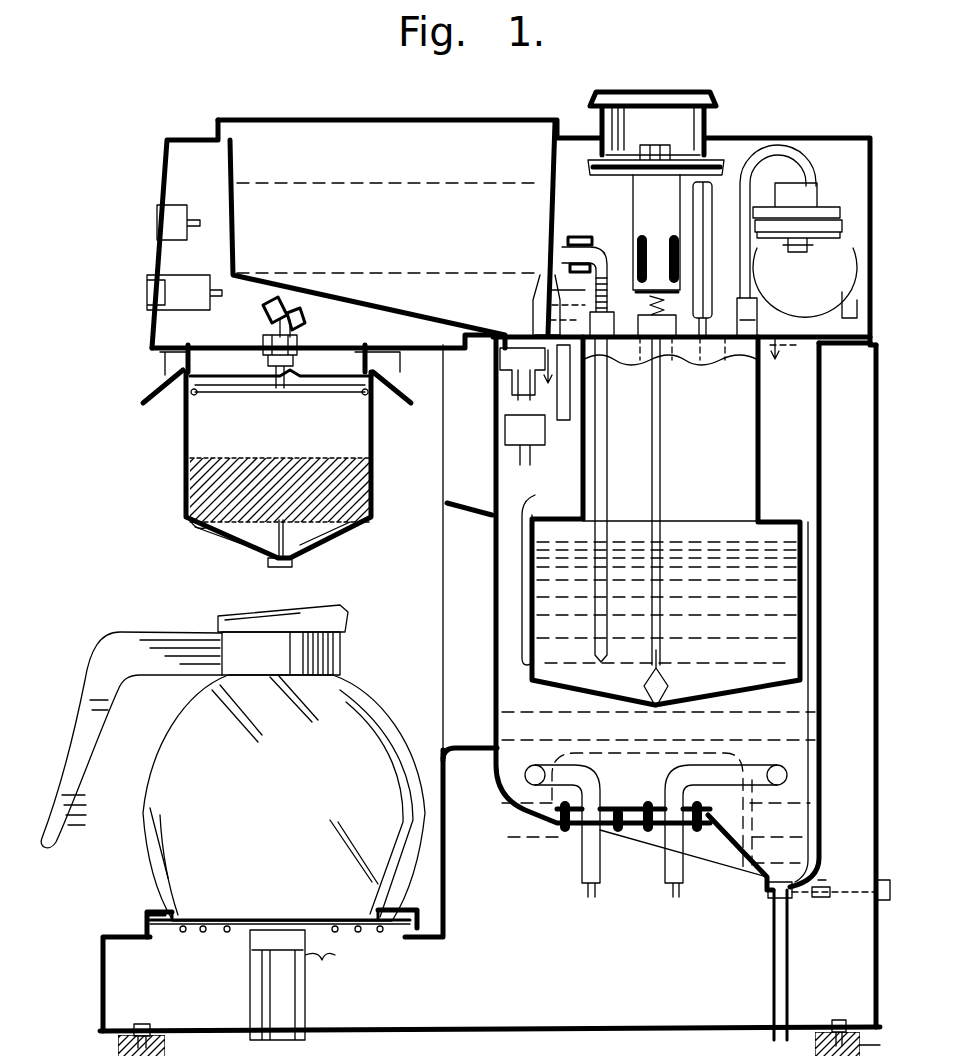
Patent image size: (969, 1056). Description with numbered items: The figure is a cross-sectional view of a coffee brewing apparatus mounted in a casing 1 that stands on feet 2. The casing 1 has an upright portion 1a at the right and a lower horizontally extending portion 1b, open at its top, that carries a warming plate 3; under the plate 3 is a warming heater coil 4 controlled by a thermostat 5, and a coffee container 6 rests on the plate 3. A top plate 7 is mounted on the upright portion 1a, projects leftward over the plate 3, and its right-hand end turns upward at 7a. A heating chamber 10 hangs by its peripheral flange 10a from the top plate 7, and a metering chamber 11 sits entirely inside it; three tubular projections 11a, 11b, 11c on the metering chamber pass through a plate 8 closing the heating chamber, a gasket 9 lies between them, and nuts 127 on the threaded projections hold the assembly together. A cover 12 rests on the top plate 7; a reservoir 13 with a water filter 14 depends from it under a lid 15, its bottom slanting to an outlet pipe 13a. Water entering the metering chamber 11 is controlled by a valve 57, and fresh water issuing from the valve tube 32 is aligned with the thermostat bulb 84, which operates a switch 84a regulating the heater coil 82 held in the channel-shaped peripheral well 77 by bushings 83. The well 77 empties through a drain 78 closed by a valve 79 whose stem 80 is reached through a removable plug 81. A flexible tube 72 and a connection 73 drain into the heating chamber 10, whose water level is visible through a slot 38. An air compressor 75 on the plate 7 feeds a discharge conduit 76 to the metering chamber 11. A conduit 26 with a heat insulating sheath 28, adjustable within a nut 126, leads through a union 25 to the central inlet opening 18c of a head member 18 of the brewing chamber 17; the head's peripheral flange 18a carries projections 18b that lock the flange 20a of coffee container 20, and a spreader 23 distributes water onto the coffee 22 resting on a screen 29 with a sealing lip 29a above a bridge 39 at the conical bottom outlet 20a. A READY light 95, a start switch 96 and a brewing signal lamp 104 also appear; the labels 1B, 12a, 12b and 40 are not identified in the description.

The casing 1 is at (560, 1027).
The upright portion 1a is at (880, 732).
The lower horizontally extending portion 1b is at (100, 982).
The section line 1B is at (664, 370).
The feet 2 is at (899, 1050).
The warming plate 3 is at (148, 912).
The warming heater coil 4 is at (200, 934).
The thermostat 5 is at (262, 1002).
The coffee container 6 is at (170, 760).
The top plate 7 is at (432, 347).
The upwardly extending end of top plate 7a is at (872, 197).
The plate 8 is at (858, 305).
The gasket 9 is at (795, 360).
The heating chamber 10 is at (825, 437).
The peripheral flange 10a is at (848, 350).
The metering chamber 11 is at (805, 522).
The tubular projection 11a is at (605, 365).
The tubular projection 11b is at (685, 365).
The tubular projection 11c is at (720, 370).
The cover 12 is at (733, 140).
The cap body 12a is at (705, 125).
The cap rim 12b is at (648, 92).
The reservoir 13 is at (228, 210).
The outlet pipe 13a is at (545, 335).
The water filter 14 is at (325, 185).
The lid 15 is at (302, 120).
The brewing chamber 17 is at (259, 448).
The head member 18 is at (350, 373).
The peripheral flange 18a is at (403, 402).
The projections 18b is at (150, 380).
The central inlet opening 18c is at (330, 347).
The coffee container 20 is at (375, 420).
The outwardly flaring flange 20a is at (272, 567).
The coffee 22 is at (340, 485).
The spreader 23 is at (232, 392).
The union 25 is at (263, 343).
The conduit 26 is at (600, 247).
The heat insulating sheath 28 is at (576, 237).
The screen 29 is at (245, 540).
The flexible plastic peripheral lip 29a is at (195, 527).
The valve tube 32 is at (505, 478).
The slot 38 is at (478, 750).
The molded plastic bridge 39 is at (315, 535).
The funnel 40 is at (550, 285).
The valve 57 is at (665, 705).
The flexible tube 72 is at (718, 216).
The connection 73 is at (737, 330).
The air compressor 75 is at (845, 258).
The discharge conduit 76 is at (800, 160).
The channel-shaped peripheral well 77 is at (822, 790).
The drain 78 is at (772, 886).
The valve 79 is at (790, 888).
The stem 80 is at (826, 885).
The removable plug 81 is at (890, 893).
The heater coil 82 is at (528, 778).
The bushings 83 is at (578, 832).
The bulb 84 is at (520, 598).
The switch 84a is at (528, 520).
The READY light 95 is at (157, 220).
The start switch 96 is at (148, 291).
The brewing signal lamp 104 is at (330, 1043).
The nut 126 is at (547, 285).
The nuts 127 is at (622, 320).